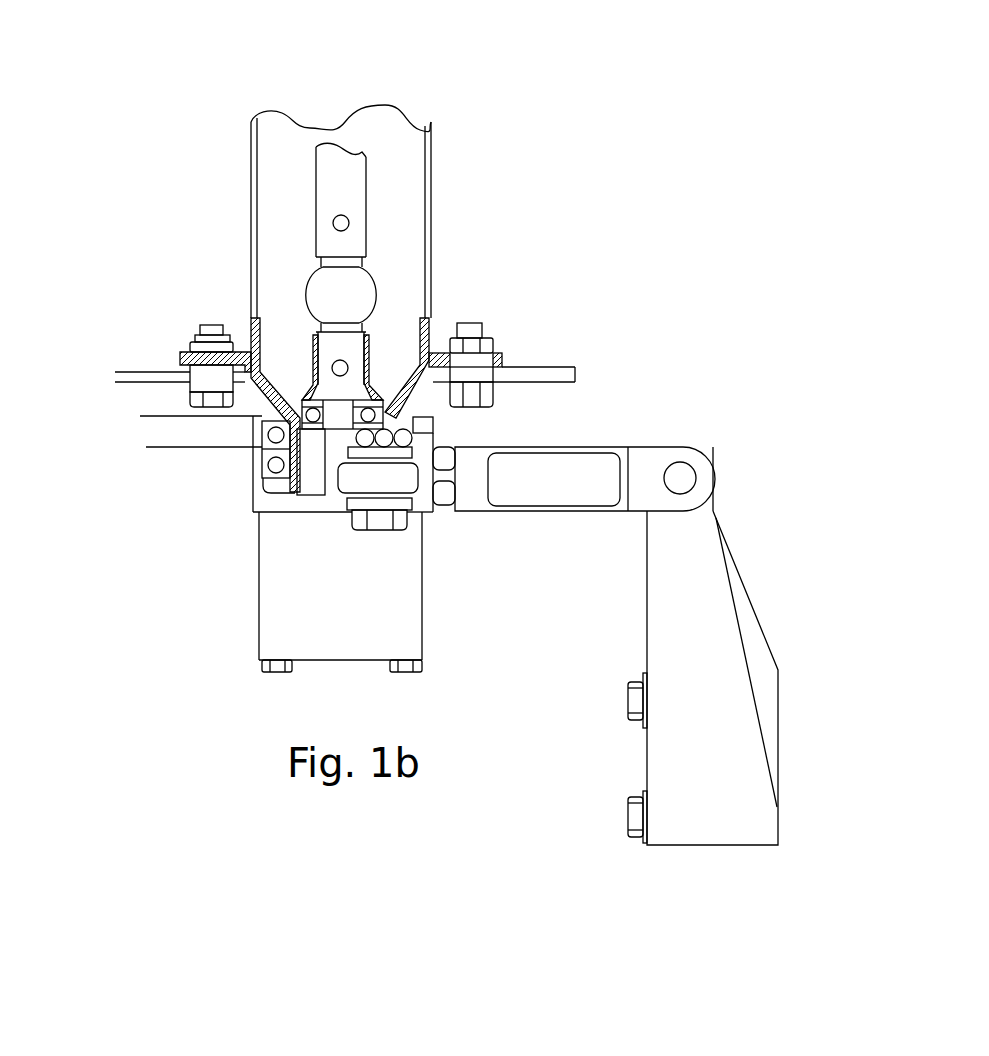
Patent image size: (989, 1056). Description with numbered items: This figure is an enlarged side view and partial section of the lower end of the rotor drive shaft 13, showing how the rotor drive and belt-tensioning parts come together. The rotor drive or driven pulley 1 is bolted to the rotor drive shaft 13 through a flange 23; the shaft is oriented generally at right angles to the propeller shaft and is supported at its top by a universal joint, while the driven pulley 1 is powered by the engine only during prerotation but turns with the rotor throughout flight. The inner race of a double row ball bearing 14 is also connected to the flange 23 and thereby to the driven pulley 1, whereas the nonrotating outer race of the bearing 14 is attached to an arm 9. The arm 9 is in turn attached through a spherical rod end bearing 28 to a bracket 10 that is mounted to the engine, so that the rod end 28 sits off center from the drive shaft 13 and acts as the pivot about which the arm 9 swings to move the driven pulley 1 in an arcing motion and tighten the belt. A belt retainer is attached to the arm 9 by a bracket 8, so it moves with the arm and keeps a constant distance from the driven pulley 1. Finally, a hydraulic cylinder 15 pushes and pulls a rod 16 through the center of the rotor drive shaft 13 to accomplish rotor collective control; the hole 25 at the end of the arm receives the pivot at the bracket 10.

The driven pulley 1 is at (575, 382).
The bracket 8 is at (152, 418).
The arm 9 is at (420, 510).
The bracket 10 is at (593, 511).
The rotor drive shaft 13 is at (430, 265).
The double row ball bearing 14 is at (262, 463).
The hydraulic cylinder 15 is at (259, 668).
The rod 16 is at (367, 172).
The flange 23 is at (500, 362).
The pivot hole 25 is at (680, 478).
The spherical rod end bearing 28 is at (335, 488).